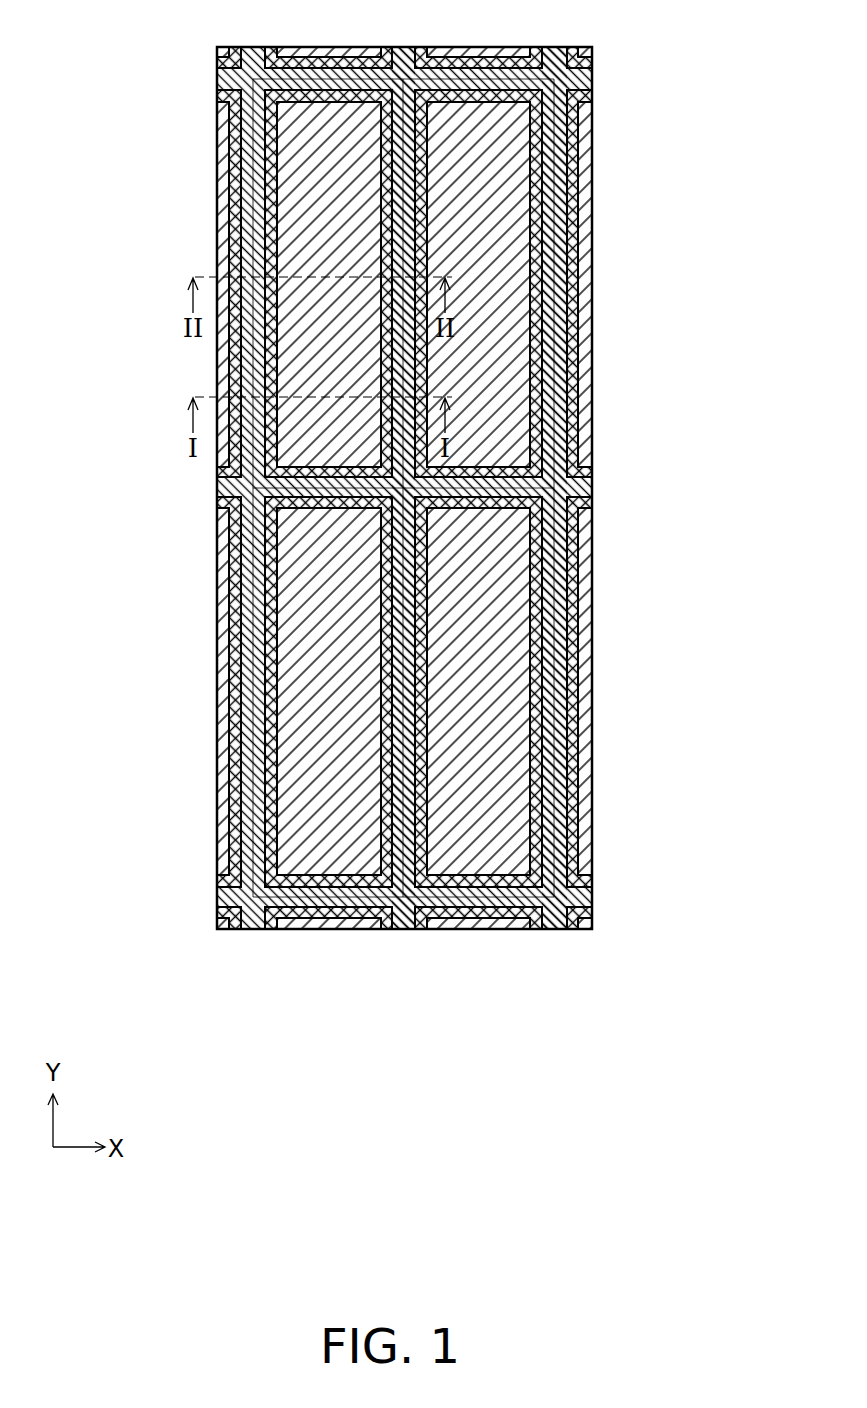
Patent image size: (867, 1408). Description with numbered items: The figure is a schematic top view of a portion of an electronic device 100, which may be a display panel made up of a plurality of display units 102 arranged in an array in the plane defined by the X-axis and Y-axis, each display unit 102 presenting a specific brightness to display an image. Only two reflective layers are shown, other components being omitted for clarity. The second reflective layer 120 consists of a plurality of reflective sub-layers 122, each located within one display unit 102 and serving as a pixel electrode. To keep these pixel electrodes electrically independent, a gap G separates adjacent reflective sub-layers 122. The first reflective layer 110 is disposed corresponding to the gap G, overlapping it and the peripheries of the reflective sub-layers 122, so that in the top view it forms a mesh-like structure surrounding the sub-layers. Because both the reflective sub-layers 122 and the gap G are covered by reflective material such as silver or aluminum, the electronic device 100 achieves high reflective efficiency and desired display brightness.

The electronic device 100 is at (496, 586).
The display unit 102 is at (555, 253).
The first reflective layer 110 is at (567, 319).
The second reflective layer 120 is at (468, 488).
The reflective sub-layer 122 is at (510, 387).
The gap G is at (404, 100).